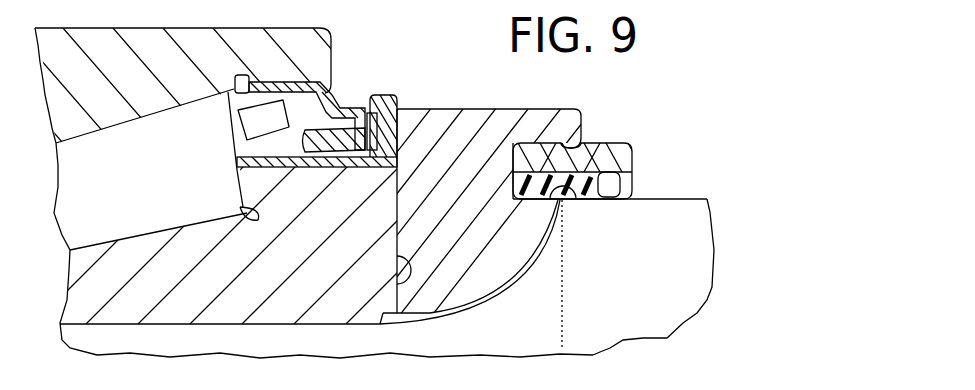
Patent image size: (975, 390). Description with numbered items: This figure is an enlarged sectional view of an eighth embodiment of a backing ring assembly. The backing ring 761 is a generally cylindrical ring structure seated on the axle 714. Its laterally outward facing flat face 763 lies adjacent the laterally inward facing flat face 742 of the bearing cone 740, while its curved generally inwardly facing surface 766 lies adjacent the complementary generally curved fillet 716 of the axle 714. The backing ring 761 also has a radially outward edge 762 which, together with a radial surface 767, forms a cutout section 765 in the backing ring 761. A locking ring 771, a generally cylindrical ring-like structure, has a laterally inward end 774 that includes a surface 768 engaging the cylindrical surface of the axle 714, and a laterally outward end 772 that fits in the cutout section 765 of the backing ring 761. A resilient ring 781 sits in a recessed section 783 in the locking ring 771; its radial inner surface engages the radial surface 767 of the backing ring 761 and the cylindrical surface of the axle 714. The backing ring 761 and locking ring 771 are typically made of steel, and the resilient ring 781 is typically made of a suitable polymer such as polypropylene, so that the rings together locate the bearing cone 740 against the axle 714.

The axle 714 is at (698, 199).
The fillet 716 is at (527, 257).
The bearing cone 740 is at (318, 327).
The laterally inward facing flat face 742 is at (395, 280).
The backing ring 761 is at (433, 109).
The radially outward edge 762 is at (530, 112).
The laterally outward facing flat face 763 is at (395, 224).
The cutout section 765 is at (590, 147).
The curved generally inwardly facing surface 766 is at (528, 282).
The radial surface 767 is at (573, 203).
The surface 768 is at (620, 199).
The locking ring 771 is at (631, 147).
The laterally outward end 772 is at (507, 153).
The laterally inward end 774 is at (630, 168).
The resilient ring 781 is at (599, 205).
The recessed section 783 is at (631, 178).